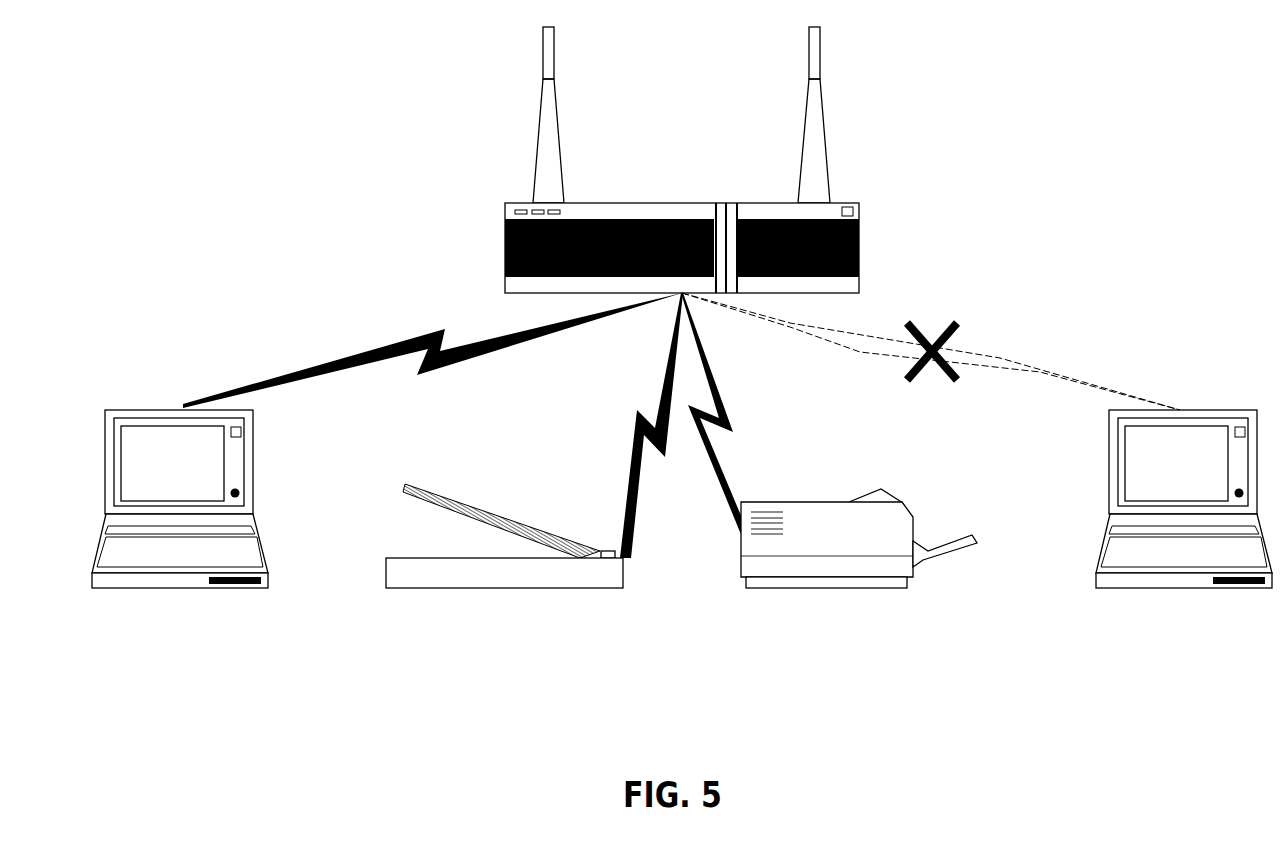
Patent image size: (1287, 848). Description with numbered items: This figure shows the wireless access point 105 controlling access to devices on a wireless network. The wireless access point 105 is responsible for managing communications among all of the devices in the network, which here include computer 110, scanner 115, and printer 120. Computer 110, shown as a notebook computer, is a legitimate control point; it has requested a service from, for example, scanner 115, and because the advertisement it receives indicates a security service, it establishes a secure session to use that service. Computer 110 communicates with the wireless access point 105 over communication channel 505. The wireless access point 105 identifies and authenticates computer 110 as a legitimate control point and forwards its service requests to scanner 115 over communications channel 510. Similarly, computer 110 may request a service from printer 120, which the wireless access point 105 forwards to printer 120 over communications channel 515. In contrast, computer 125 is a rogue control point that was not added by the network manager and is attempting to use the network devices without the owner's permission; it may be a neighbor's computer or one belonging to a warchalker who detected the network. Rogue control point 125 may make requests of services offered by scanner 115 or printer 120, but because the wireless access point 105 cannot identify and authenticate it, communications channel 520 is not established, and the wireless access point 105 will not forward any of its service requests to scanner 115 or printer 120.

The wireless access point 105 is at (505, 232).
The computer 110 is at (138, 590).
The scanner 115 is at (432, 588).
The printer 120 is at (787, 588).
The computer 125 is at (1142, 590).
The communication channel 505 is at (373, 350).
The communications channel 510 is at (632, 470).
The communications channel 515 is at (717, 470).
The communications channel 520 is at (993, 352).